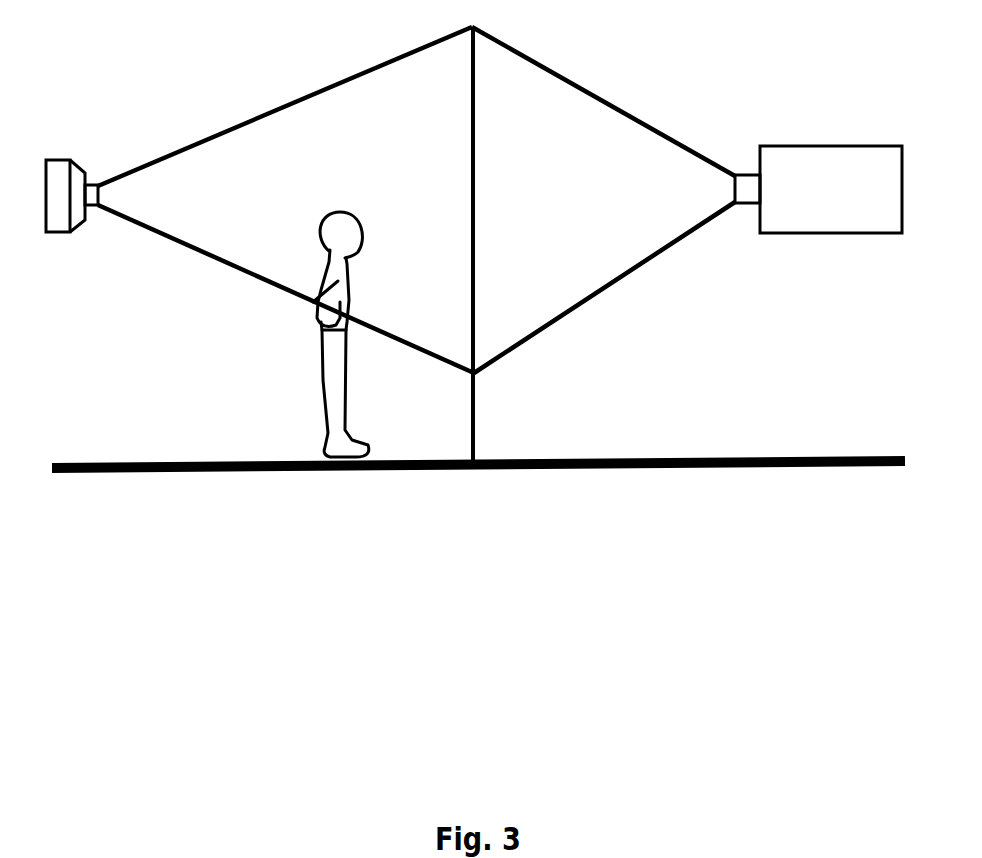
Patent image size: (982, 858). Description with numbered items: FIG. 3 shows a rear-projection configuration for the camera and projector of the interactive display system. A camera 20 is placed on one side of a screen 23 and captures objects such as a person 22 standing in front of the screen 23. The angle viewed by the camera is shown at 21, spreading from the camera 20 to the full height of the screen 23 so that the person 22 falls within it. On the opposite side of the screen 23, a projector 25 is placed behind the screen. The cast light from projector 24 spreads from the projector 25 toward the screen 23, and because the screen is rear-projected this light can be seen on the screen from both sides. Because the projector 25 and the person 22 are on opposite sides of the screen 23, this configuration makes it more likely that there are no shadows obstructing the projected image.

The camera 20 is at (59, 158).
The angle viewed by the camera 21 is at (278, 108).
The person 22 is at (319, 233).
The screen 23 is at (478, 203).
The cast light from projector 24 is at (598, 97).
The projector 25 is at (828, 146).